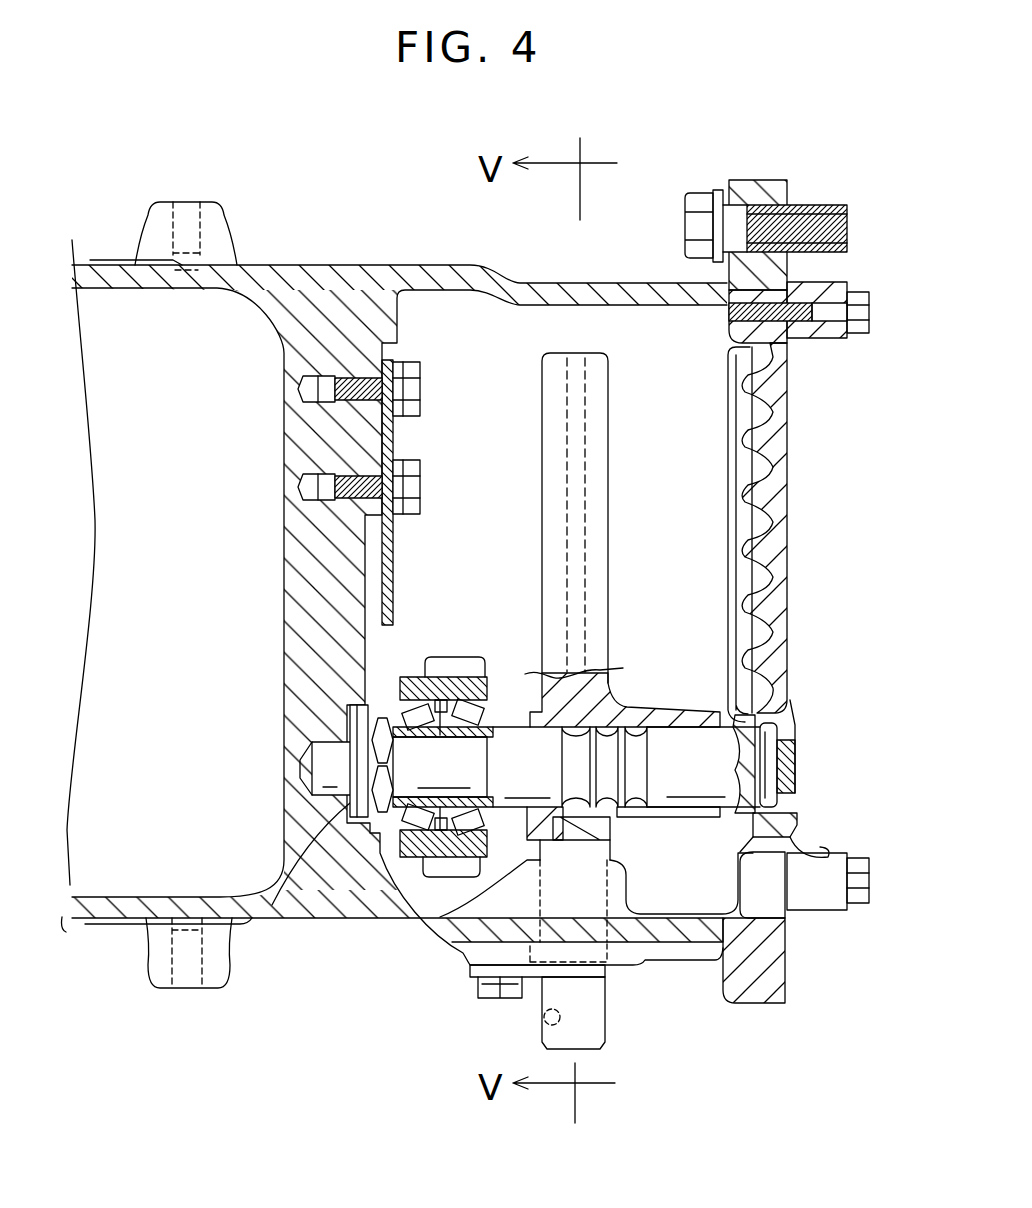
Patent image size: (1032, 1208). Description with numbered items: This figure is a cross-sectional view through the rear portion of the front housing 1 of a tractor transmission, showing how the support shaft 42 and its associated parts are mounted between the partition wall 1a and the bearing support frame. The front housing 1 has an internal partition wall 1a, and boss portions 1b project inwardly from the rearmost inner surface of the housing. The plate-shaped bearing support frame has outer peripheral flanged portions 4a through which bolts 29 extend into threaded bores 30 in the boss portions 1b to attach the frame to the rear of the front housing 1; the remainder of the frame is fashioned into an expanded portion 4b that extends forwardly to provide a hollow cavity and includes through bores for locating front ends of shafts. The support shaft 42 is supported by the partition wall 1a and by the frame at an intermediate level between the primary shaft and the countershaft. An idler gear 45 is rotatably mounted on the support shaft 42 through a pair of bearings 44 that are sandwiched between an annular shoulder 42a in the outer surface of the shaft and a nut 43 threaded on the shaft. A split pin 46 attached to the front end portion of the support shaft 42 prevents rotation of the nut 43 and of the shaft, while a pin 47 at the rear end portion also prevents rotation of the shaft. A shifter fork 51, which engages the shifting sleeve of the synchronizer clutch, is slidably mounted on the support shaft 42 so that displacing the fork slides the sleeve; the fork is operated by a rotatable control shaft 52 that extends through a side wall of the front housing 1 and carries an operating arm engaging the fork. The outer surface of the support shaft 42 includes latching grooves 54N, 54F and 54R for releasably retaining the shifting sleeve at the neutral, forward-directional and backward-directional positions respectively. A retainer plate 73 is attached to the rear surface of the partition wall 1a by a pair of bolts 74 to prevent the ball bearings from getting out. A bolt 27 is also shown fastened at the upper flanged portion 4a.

The front housing 1 is at (110, 910).
The partition wall 1a is at (317, 600).
The boss portions 1b is at (763, 340).
The flanged portions 4a is at (813, 286).
The expanded portion 4b is at (733, 492).
The bolt 27 is at (803, 222).
The bolts 29 is at (830, 312).
The threaded bores 30 is at (735, 322).
The support shaft 42 is at (692, 773).
The annular shoulder 42a is at (473, 757).
The nut 43 is at (373, 727).
The bearings 44 is at (432, 868).
The idler gear 45 is at (472, 665).
The split pin 46 is at (353, 822).
The pin 47 is at (778, 735).
The shifter fork 51 is at (597, 597).
The control shaft 52 is at (593, 1005).
The latching groove 54F is at (627, 712).
The latching groove 54N is at (607, 808).
The latching groove 54R is at (576, 809).
The retainer plate 73 is at (388, 560).
The bolts 74 is at (410, 463).